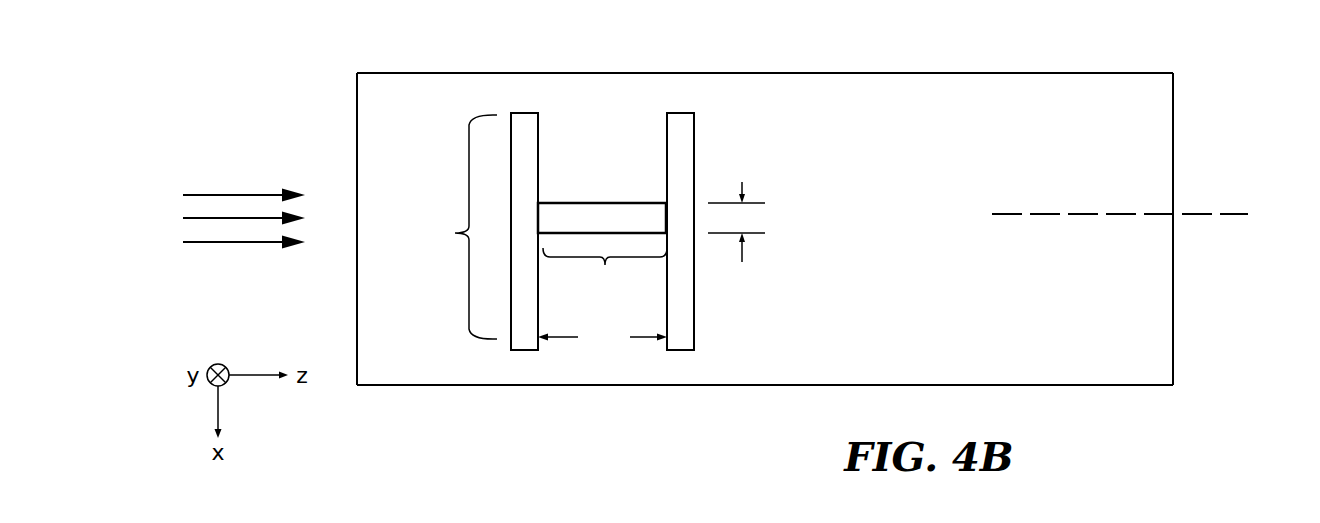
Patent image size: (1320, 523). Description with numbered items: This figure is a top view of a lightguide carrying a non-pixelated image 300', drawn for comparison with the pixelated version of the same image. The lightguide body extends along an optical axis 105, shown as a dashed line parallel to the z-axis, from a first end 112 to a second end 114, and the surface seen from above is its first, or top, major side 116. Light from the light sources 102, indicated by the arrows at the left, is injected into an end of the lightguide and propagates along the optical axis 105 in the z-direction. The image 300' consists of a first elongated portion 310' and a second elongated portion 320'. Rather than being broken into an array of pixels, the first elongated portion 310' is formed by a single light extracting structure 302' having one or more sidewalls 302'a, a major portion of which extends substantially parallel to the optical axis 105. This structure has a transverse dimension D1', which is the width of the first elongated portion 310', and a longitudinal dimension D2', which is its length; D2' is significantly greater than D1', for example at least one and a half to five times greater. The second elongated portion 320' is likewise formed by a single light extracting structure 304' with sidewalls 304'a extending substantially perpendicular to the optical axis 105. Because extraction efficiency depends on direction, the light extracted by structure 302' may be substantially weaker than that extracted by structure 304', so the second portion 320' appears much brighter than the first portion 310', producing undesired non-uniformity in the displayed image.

The light sources 102 is at (232, 242).
The optical axis 105 is at (1213, 214).
The first end 112 is at (357, 122).
The second end 114 is at (1173, 105).
The first major side 116 is at (1053, 133).
The image 300' is at (752, 407).
The light extracting structure 302' is at (696, 231).
The sidewall 302'a is at (602, 192).
The light extracting structure 304' is at (566, 189).
The sidewall 304'a is at (582, 226).
The first elongated portion 310' is at (605, 282).
The second elongated portion 320' is at (438, 227).
The transverse dimension D1' is at (758, 222).
The longitudinal dimension D2' is at (602, 338).